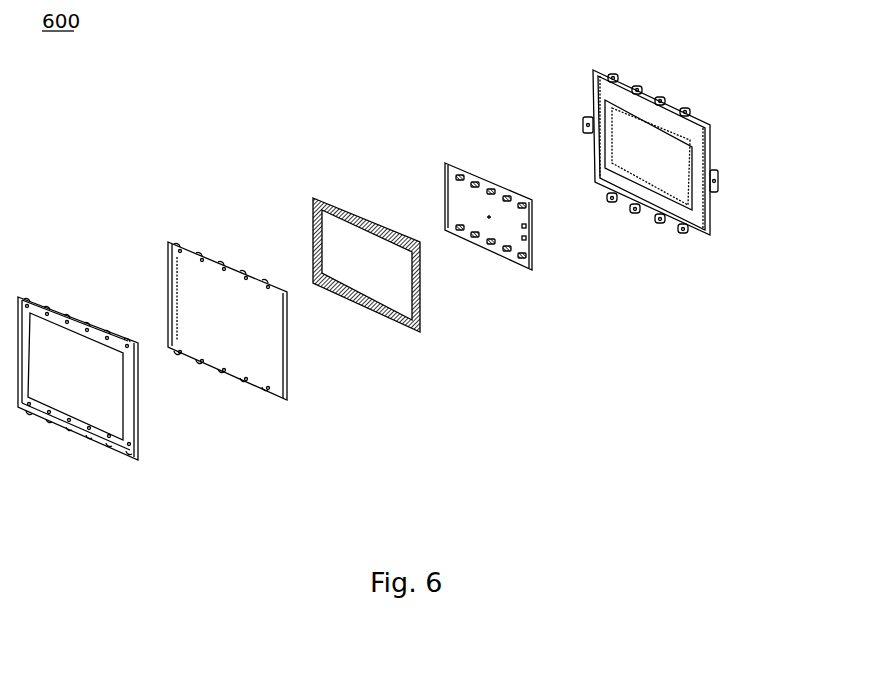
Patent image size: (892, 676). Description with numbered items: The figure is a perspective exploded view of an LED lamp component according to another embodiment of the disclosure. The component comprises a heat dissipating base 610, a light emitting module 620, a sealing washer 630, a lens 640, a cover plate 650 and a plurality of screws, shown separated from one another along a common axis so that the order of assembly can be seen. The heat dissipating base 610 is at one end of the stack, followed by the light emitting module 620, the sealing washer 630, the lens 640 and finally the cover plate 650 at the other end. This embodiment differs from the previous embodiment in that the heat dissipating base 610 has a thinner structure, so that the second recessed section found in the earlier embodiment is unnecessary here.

The heat dissipating base 610 is at (697, 148).
The light emitting module 620 is at (452, 162).
The sealing washer 630 is at (327, 217).
The lens 640 is at (197, 263).
The cover plate 650 is at (28, 292).